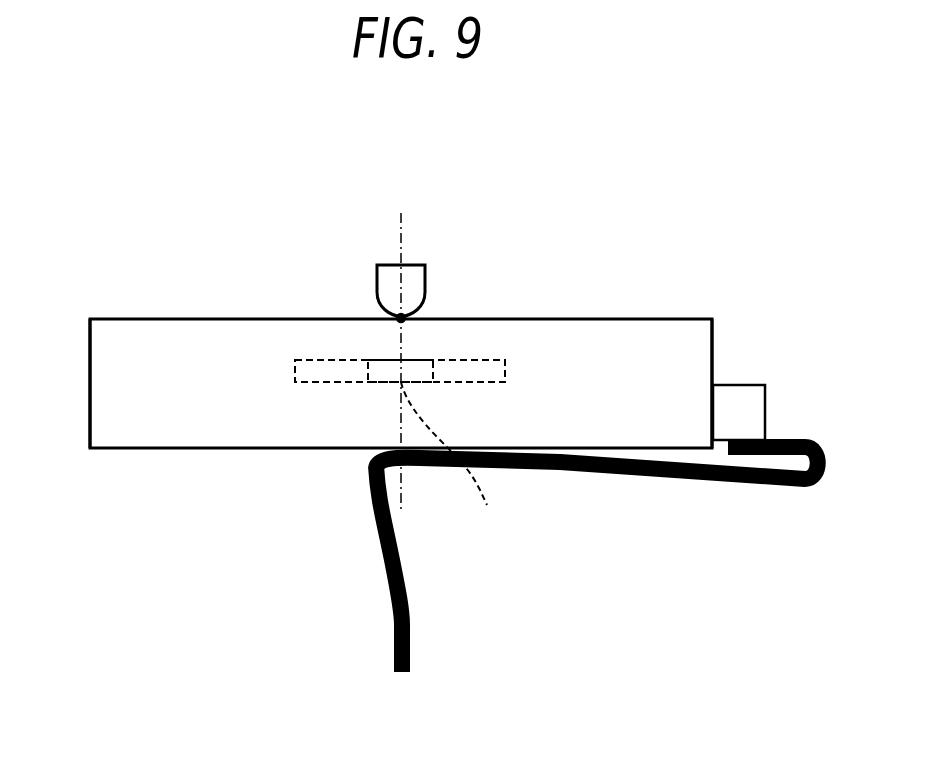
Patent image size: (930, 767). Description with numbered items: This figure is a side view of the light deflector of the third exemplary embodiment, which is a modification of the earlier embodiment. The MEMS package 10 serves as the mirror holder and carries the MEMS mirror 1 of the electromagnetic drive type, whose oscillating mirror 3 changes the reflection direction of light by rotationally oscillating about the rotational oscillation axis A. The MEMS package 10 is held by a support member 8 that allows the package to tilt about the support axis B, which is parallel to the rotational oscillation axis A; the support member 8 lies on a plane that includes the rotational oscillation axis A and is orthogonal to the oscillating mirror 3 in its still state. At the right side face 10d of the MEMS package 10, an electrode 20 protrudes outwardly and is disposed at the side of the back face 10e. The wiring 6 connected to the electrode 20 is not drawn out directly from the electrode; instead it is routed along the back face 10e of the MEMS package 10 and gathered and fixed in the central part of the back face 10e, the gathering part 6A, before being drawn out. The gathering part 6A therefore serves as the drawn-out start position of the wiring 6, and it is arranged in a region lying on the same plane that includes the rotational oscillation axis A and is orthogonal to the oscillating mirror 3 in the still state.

The MEMS mirror 1 is at (313, 384).
The oscillating mirror 3 is at (385, 383).
The wiring 6 is at (603, 478).
The gathering part 6A is at (402, 470).
The support member 8 is at (401, 266).
The MEMS package 10 is at (648, 310).
The right side face 10d is at (714, 345).
The back face 10e is at (104, 450).
The electrode 20 is at (746, 360).
The rotational oscillation axis A is at (445, 460).
The support axis B is at (404, 316).